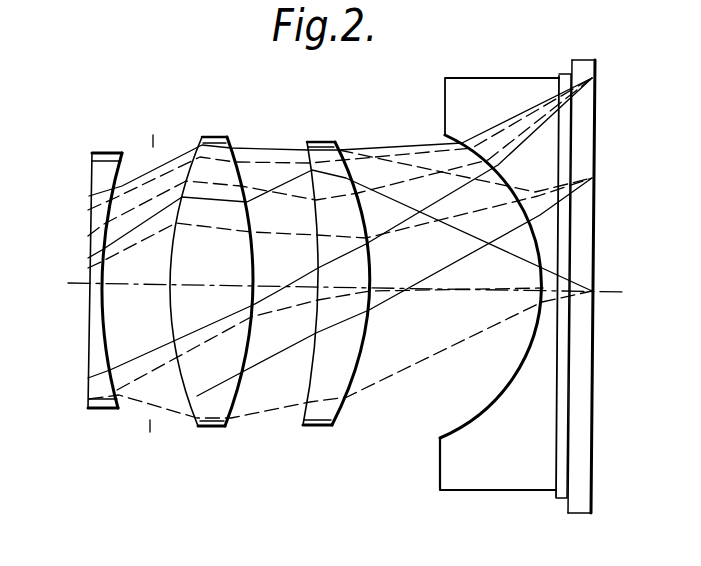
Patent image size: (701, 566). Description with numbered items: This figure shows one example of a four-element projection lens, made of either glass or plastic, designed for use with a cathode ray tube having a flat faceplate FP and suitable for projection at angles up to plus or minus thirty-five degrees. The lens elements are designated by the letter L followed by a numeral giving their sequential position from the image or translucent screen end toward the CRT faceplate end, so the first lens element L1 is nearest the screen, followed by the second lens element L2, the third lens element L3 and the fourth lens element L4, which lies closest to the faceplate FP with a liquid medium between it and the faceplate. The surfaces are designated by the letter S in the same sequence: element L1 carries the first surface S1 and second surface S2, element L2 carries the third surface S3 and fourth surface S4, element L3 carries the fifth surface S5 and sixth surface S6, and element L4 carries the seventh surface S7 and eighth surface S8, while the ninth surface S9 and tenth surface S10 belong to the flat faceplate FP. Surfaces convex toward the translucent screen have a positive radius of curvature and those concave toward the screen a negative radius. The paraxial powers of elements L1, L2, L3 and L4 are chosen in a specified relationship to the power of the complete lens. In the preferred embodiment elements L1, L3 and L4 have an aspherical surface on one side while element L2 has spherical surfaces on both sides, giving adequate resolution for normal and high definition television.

The first lens element L1 is at (91, 257).
The second lens element L2 is at (211, 281).
The third lens element L3 is at (339, 289).
The fourth lens element L4 is at (492, 297).
The first surface S1 is at (88, 226).
The second surface S2 is at (110, 216).
The third surface S3 is at (171, 324).
The fourth surface S4 is at (249, 346).
The fifth surface S5 is at (310, 375).
The sixth surface S6 is at (338, 413).
The seventh surface S7 is at (473, 416).
The eighth surface S8 is at (557, 469).
The ninth surface S9 is at (566, 500).
The tenth surface S10 is at (592, 440).
The CRT faceplate FP is at (582, 297).